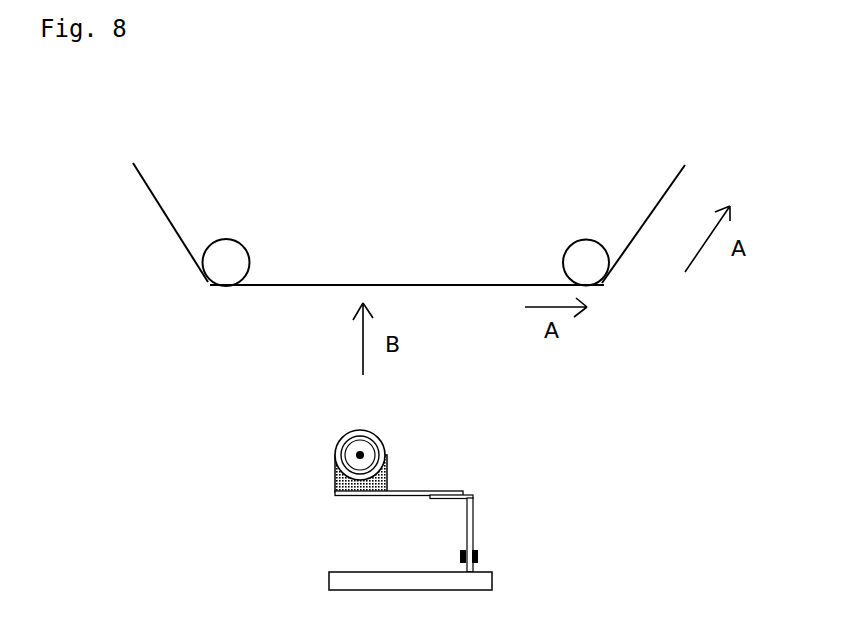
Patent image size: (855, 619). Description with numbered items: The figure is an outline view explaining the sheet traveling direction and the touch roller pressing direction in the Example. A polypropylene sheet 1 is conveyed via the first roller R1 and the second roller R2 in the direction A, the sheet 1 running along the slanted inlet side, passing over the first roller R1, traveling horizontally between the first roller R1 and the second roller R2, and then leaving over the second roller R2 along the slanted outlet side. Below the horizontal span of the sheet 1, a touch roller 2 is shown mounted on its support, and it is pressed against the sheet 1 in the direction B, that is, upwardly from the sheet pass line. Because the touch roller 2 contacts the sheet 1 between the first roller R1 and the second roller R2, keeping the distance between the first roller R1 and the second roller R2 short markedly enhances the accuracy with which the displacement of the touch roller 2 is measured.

The sheet 1 is at (670, 183).
The first roller R1 is at (230, 248).
The second roller R2 is at (580, 250).
The touch roller 2 is at (338, 444).